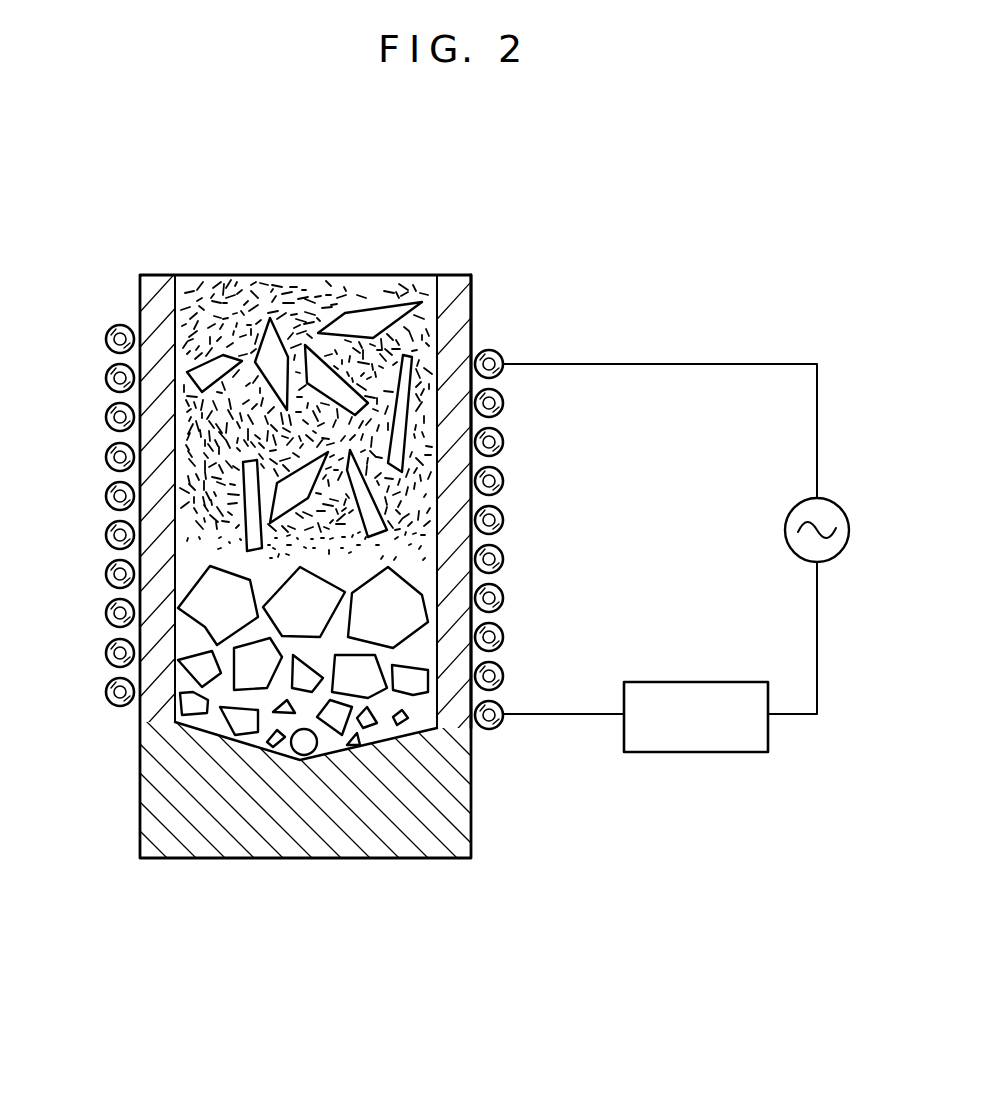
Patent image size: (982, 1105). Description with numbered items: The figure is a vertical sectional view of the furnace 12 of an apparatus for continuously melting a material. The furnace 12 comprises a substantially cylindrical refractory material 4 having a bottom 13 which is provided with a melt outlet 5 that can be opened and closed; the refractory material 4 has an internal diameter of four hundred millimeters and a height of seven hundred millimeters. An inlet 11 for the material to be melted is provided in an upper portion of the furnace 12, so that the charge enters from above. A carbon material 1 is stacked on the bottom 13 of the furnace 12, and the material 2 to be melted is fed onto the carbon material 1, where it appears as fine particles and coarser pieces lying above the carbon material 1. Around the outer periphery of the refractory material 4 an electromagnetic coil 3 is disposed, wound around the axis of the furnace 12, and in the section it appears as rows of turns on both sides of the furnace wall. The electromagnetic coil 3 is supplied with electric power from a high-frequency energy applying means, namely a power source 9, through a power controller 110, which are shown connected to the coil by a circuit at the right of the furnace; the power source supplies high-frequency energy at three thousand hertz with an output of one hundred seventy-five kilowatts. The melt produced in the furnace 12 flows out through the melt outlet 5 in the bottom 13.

The carbon material 1 is at (207, 603).
The material to be melted 2 is at (212, 368).
The electromagnetic coil 3 is at (501, 352).
The refractory material 4 is at (462, 495).
The melt outlet 5 is at (316, 755).
The power source 9 is at (795, 508).
The inlet 11 is at (345, 275).
The furnace 12 is at (472, 300).
The bottom 13 is at (364, 827).
The power controller 110 is at (700, 682).